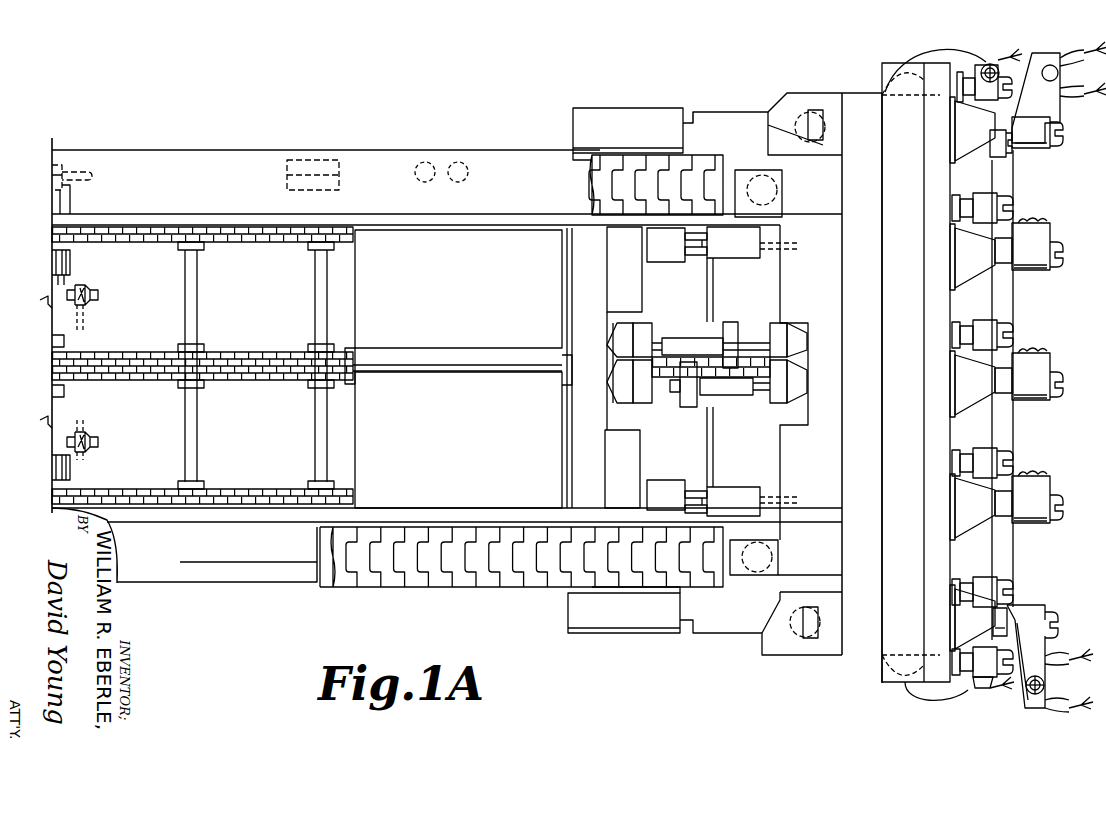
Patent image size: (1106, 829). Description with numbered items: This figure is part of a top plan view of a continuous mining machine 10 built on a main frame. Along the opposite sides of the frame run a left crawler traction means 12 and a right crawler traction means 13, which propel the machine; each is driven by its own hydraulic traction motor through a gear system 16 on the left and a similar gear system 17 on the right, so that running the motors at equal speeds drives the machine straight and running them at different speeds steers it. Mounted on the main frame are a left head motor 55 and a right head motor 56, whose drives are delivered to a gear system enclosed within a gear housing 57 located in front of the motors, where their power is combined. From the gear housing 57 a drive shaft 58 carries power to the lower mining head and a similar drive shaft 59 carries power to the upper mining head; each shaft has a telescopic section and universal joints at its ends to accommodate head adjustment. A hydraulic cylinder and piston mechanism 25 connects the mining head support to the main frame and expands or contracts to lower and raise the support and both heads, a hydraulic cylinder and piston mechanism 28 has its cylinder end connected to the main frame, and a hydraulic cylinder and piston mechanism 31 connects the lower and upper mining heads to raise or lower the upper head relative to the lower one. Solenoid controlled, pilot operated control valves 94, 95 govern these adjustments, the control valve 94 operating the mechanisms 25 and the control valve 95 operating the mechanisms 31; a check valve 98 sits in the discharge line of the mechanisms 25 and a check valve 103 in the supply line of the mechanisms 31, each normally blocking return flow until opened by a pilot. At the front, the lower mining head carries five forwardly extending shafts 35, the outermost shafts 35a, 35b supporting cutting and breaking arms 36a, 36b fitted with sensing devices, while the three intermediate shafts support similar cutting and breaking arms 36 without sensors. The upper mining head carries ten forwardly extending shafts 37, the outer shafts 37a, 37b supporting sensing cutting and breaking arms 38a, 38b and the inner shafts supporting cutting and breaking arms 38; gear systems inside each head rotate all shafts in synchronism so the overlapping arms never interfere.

The continuous mining machine 10 is at (222, 145).
The left crawler traction means 12 is at (600, 187).
The right crawler traction means 13 is at (530, 578).
The gear system 16 is at (85, 292).
The gear system 17 is at (87, 441).
The hydraulic cylinder and piston mechanism 25 is at (778, 189).
The hydraulic cylinder and piston mechanism 28 is at (745, 237).
The hydraulic cylinder and piston mechanism 31 is at (798, 137).
The forwardly extending shafts 35 is at (1003, 230).
The shaft 35a is at (1000, 612).
The shaft 35b is at (1012, 133).
The cutting and breaking arms 36 is at (1042, 268).
The cutting and breaking arm 36a is at (1033, 650).
The cutting and breaking arm 36b is at (1057, 120).
The forwardly extending shafts 37 is at (956, 195).
The shaft 37a is at (958, 622).
The shaft 37b is at (958, 107).
The cutting and breaking arms 38 is at (985, 197).
The cutting and breaking arm 38a is at (983, 688).
The cutting and breaking arm 38b is at (940, 42).
The left head motor 55 is at (484, 293).
The right head motor 56 is at (484, 440).
The gear housing 57 is at (588, 298).
The drive shaft 58 is at (690, 343).
The drive shaft 59 is at (730, 387).
The control valve 94 is at (316, 165).
The control valve 95 is at (287, 183).
The check valve 98 is at (423, 162).
The check valve 103 is at (460, 161).